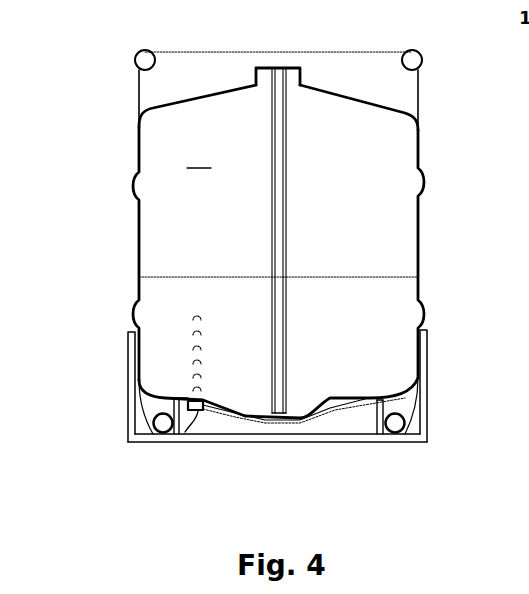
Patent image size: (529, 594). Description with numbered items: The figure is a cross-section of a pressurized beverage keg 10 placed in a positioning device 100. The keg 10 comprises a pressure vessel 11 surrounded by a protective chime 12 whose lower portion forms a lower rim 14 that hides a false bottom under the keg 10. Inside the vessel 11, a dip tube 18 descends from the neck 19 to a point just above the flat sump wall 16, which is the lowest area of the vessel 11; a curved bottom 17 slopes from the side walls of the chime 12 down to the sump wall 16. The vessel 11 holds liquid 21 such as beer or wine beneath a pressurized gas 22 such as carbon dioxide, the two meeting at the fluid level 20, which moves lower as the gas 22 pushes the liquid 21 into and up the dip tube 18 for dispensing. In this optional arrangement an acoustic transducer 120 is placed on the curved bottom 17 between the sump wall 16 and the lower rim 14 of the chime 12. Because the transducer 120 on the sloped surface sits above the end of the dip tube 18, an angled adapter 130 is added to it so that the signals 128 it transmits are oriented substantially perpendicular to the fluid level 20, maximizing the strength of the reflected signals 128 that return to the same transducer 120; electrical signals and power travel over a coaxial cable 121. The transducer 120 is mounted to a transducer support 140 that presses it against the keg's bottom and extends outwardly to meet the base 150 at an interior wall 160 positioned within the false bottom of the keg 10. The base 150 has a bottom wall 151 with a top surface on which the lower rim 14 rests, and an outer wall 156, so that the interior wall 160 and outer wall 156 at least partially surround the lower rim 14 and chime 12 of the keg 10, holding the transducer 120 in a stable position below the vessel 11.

The keg 10 is at (140, 100).
The pressure vessel 11 is at (199, 158).
The chime 12 is at (155, 97).
The lower rim 14 is at (157, 430).
The sump wall 16 is at (292, 418).
The curved bottom 17 is at (327, 398).
The dip tube 18 is at (281, 165).
The neck 19 is at (298, 72).
The fluid level 20 is at (371, 278).
The liquid 21 is at (377, 318).
The pressurized gas 22 is at (373, 240).
The positioning device 100 is at (130, 434).
The acoustic transducer 120 is at (203, 412).
The coaxial cable 121 is at (188, 434).
The signal 128 is at (195, 333).
The angled adapter 130 is at (192, 400).
The transducer support 140 is at (238, 418).
The base 150 is at (426, 412).
The bottom wall 151 is at (408, 437).
The outer wall 156 is at (426, 372).
The interior wall 160 is at (360, 425).